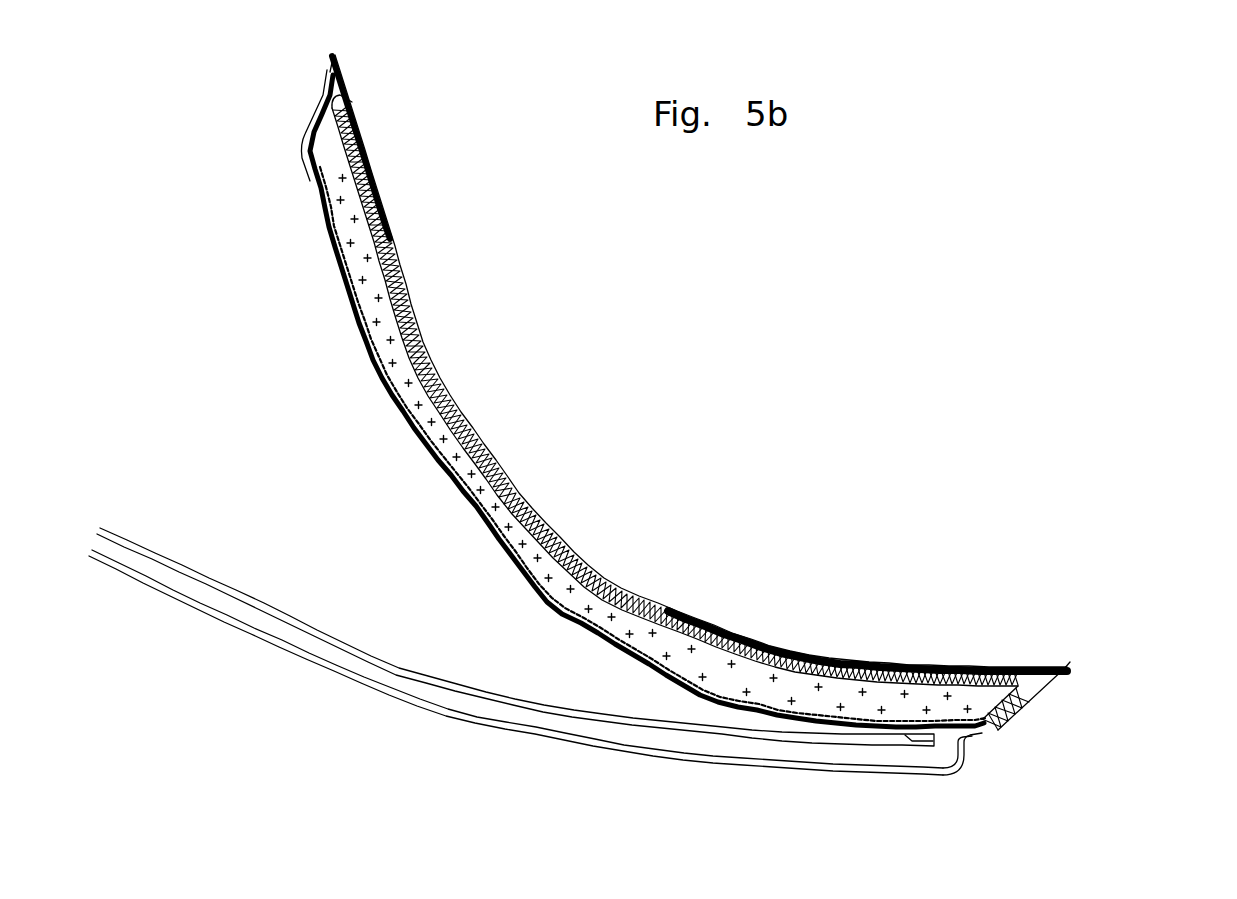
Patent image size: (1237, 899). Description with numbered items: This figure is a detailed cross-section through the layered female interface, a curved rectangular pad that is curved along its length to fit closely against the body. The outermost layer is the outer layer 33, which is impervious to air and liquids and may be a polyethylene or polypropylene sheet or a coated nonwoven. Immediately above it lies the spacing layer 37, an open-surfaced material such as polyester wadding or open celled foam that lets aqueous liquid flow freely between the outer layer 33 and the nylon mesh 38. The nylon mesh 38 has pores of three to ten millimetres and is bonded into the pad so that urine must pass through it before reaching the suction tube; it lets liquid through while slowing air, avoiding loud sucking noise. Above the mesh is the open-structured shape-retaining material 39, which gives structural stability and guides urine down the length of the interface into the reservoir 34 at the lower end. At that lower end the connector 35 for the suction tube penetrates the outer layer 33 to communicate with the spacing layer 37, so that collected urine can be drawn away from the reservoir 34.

The outer layer 33 is at (1068, 673).
The reservoir 34 is at (815, 698).
The connector 35 is at (942, 752).
The spacing layer 37 is at (1000, 723).
The nylon mesh 38 is at (1052, 680).
The open-structured shape-retaining material 39 is at (392, 340).